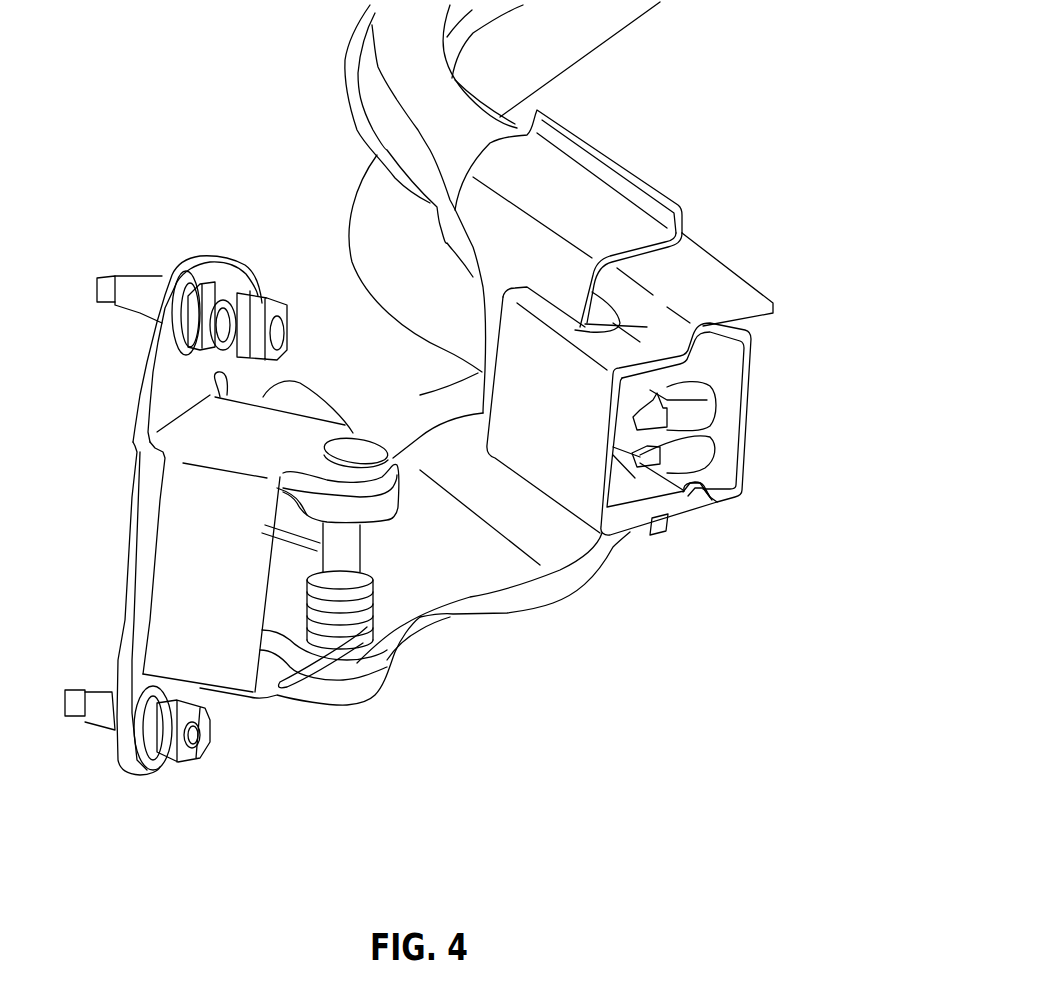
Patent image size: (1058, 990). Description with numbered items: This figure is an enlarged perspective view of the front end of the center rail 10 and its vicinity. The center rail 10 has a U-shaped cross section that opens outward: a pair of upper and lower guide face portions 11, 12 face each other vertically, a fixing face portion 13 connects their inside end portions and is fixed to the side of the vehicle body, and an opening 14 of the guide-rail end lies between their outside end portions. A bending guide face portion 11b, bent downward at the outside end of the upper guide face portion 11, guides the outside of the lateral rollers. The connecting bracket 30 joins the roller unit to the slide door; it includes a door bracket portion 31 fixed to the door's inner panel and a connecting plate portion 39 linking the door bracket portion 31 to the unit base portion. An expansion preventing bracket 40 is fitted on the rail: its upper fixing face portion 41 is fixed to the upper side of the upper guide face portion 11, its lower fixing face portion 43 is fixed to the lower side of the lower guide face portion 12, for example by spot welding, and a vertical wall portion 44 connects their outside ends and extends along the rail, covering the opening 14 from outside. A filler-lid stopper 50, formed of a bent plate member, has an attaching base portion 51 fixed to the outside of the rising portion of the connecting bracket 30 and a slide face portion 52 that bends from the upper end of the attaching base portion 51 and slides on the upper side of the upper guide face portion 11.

The center rail 10 is at (740, 471).
The upper guide face portion 11 is at (750, 348).
The bending guide face portion 11b is at (743, 373).
The lower guide face portion 12 is at (733, 500).
The fixing face portion 13 is at (750, 412).
The opening 14 is at (403, 227).
The connecting bracket 30 is at (432, 627).
The door bracket portion 31 is at (130, 442).
The connecting plate portion 39 is at (350, 437).
The expansion preventing bracket 40 is at (537, 493).
The upper fixing face portion 41 is at (707, 270).
The lower fixing face portion 43 is at (687, 517).
The vertical wall portion 44 is at (577, 497).
The filler-lid stopper 50 is at (490, 282).
The attaching base portion 51 is at (497, 337).
The slide face portion 52 is at (587, 188).